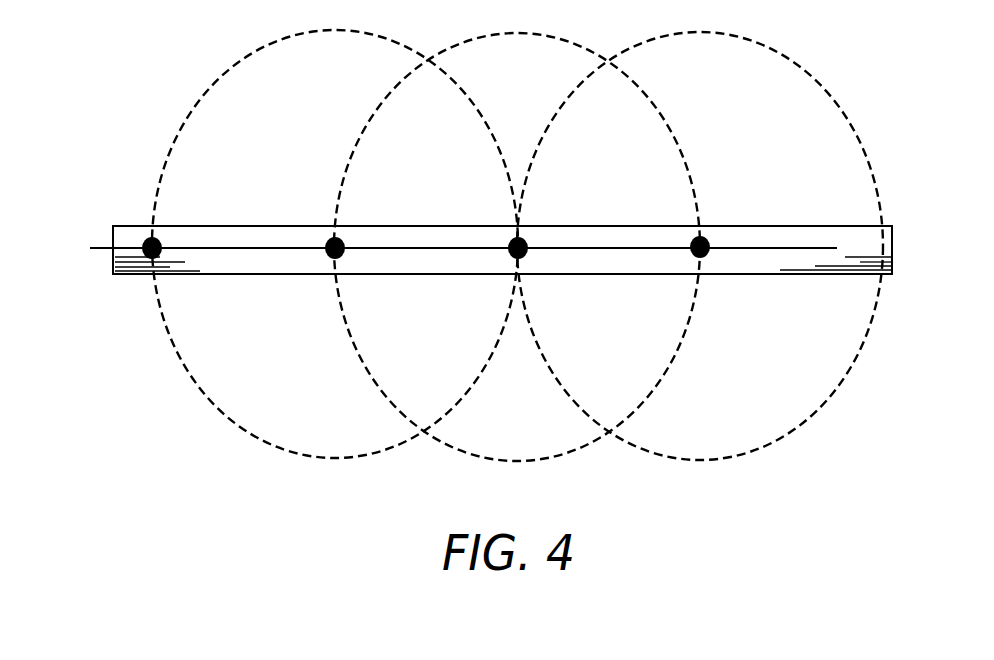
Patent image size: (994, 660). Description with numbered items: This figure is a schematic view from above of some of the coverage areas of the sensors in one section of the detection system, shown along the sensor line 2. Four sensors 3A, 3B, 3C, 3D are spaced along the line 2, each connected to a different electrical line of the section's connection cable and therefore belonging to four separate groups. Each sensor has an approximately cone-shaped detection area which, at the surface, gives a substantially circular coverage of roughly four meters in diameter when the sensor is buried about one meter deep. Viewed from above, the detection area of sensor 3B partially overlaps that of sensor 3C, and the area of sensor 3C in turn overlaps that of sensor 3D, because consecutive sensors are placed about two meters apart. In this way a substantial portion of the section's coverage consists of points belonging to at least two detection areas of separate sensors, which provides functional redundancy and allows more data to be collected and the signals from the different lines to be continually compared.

The transmission line 2 is at (145, 278).
The sensor 3A is at (150, 238).
The sensor 3B is at (332, 238).
The sensor 3C is at (515, 238).
The sensor 3D is at (695, 236).